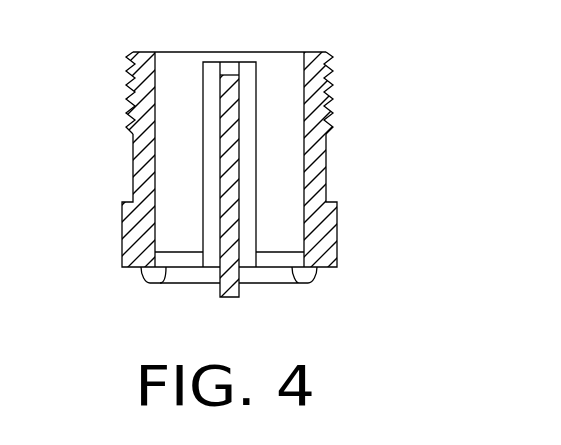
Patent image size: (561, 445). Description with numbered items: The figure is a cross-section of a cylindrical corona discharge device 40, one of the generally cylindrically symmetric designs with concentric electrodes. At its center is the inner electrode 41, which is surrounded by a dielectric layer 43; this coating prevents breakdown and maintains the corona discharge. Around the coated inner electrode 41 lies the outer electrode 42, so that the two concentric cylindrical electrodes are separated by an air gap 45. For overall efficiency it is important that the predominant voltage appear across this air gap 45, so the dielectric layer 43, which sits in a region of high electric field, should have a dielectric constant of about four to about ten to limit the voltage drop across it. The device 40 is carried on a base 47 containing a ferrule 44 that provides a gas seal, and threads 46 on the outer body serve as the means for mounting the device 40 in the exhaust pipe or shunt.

The cylindrical corona discharge device 40 is at (413, 141).
The inner electrode 41 is at (240, 296).
The outer electrode 42 is at (149, 73).
The dielectric layer 43 is at (259, 63).
The ferrule 44 is at (306, 281).
The air gap 45 is at (292, 141).
The threads 46 is at (127, 100).
The base 47 is at (192, 260).